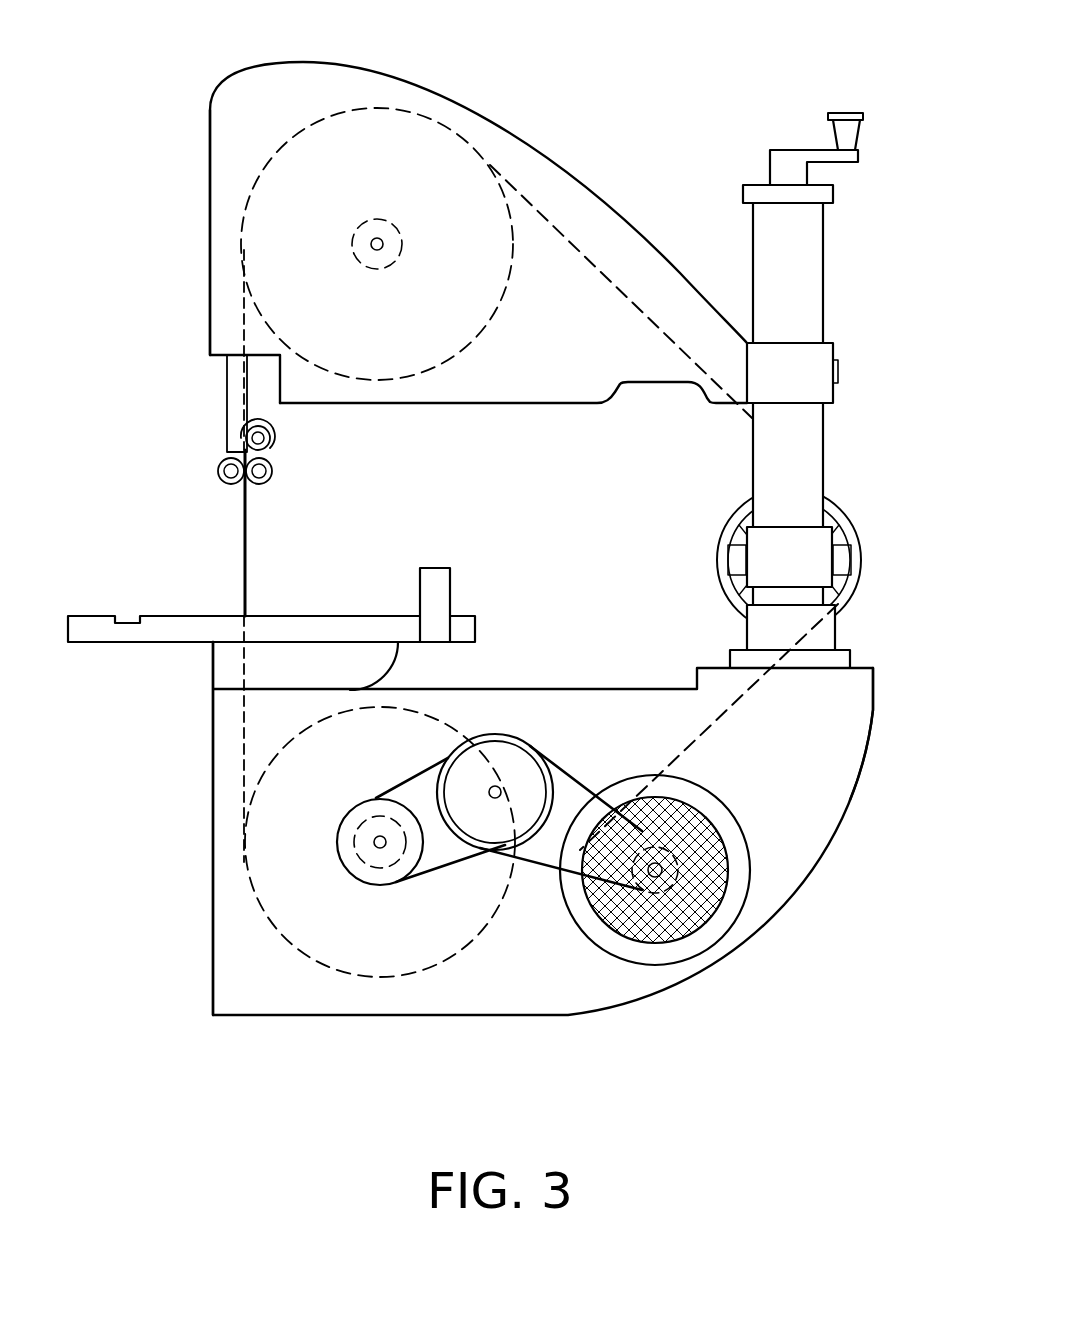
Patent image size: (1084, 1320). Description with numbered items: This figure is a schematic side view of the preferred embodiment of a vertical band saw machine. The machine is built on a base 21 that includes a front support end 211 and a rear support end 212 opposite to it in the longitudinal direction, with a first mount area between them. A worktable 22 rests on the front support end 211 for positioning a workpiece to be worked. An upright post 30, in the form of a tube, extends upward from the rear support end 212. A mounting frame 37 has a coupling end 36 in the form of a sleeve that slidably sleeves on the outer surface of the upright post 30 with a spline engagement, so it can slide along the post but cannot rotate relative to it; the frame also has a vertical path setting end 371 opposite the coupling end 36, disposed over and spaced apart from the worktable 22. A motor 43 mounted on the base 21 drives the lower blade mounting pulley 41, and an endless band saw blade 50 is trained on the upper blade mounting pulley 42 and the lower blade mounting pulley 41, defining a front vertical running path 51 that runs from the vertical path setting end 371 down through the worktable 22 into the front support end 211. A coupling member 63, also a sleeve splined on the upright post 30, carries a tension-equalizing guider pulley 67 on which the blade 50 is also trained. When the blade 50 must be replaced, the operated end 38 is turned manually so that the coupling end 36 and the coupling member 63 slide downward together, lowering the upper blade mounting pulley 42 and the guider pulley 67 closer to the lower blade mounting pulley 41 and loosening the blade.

The base 21 is at (520, 1000).
The front support end 211 is at (223, 702).
The rear support end 212 is at (832, 682).
The worktable 22 is at (80, 625).
The upright post 30 is at (836, 248).
The coupling end 36 is at (827, 352).
The mounting frame 37 is at (527, 135).
The vertical path setting end 371 is at (225, 268).
The operated end 38 is at (837, 137).
The lower blade mounting pulley 41 is at (245, 905).
The upper blade mounting pulley 42 is at (253, 203).
The motor 43 is at (700, 942).
The endless band saw blade 50 is at (243, 552).
The front vertical running path 51 is at (242, 588).
The coupling member 63 is at (808, 537).
The tension-equalizing guider pulley 67 is at (855, 548).